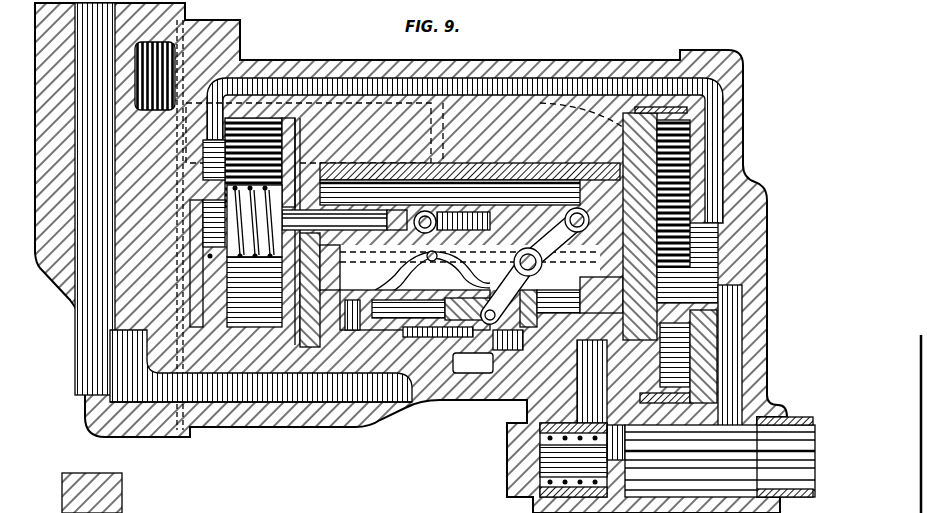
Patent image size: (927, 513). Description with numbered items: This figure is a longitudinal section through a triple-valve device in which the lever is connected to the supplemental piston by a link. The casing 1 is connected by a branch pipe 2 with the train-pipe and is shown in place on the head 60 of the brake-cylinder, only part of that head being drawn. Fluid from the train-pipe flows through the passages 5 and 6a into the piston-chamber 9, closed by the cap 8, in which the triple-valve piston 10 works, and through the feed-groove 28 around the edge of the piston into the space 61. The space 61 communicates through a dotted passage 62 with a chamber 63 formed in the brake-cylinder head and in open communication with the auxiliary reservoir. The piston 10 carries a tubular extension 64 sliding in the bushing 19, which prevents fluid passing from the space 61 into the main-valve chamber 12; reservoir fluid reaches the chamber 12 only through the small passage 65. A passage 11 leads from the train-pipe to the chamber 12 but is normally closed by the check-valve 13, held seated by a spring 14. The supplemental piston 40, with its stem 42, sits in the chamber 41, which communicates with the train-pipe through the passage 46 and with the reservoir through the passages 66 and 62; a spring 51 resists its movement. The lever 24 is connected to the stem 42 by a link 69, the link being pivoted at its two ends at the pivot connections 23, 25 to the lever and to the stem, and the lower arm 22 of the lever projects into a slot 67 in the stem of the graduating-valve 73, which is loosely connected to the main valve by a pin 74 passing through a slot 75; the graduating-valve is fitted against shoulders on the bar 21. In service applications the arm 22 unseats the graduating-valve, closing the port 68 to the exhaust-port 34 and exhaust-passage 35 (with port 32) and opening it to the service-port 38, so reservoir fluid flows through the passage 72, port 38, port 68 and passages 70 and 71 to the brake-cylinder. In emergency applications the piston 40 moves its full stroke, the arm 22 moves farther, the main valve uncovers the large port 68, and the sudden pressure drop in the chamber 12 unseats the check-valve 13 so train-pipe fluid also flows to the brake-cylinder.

The casing 1 is at (350, 62).
The branch pipe 2 is at (785, 457).
The passage 5 is at (720, 461).
The passage 6a is at (729, 370).
The cap 8 is at (758, 248).
The piston-chamber 9 is at (688, 356).
The triple-valve piston 10 is at (687, 275).
The passage 11 is at (592, 386).
The main-valve chamber 12 is at (550, 308).
The check-valve 13 is at (621, 442).
The spring 14 is at (573, 461).
The bushing 19 is at (508, 170).
The bar 21 is at (460, 267).
The lower arm 22 is at (500, 304).
The link 23 is at (537, 267).
The lever 24 is at (543, 265).
The pivot pin 25 is at (590, 222).
The feed-groove 28 is at (665, 176).
The port 32 is at (590, 121).
The exhaust-port 34 is at (530, 371).
The exhaust-passage 35 is at (473, 363).
The service-port 38 is at (346, 328).
The supplemental piston 40 is at (284, 293).
The chamber 41 is at (229, 302).
The stem 42 is at (344, 220).
The passage 46 is at (258, 92).
The spring 51 is at (236, 256).
The head 60 is at (88, 356).
The space 61 is at (635, 148).
The passage 62 is at (199, 80).
The chamber 63 is at (162, 100).
The tubular extension 64 is at (598, 325).
The passage 65 is at (314, 133).
The passage 66 is at (305, 155).
The slot 67 is at (508, 340).
The port 68 is at (425, 341).
The link 69 is at (452, 222).
The passage 70 is at (261, 389).
The passage 71 is at (104, 199).
The passage 72 is at (380, 292).
The graduating-valve 73 is at (415, 310).
The pin 74 is at (458, 269).
The slot 75 is at (467, 309).